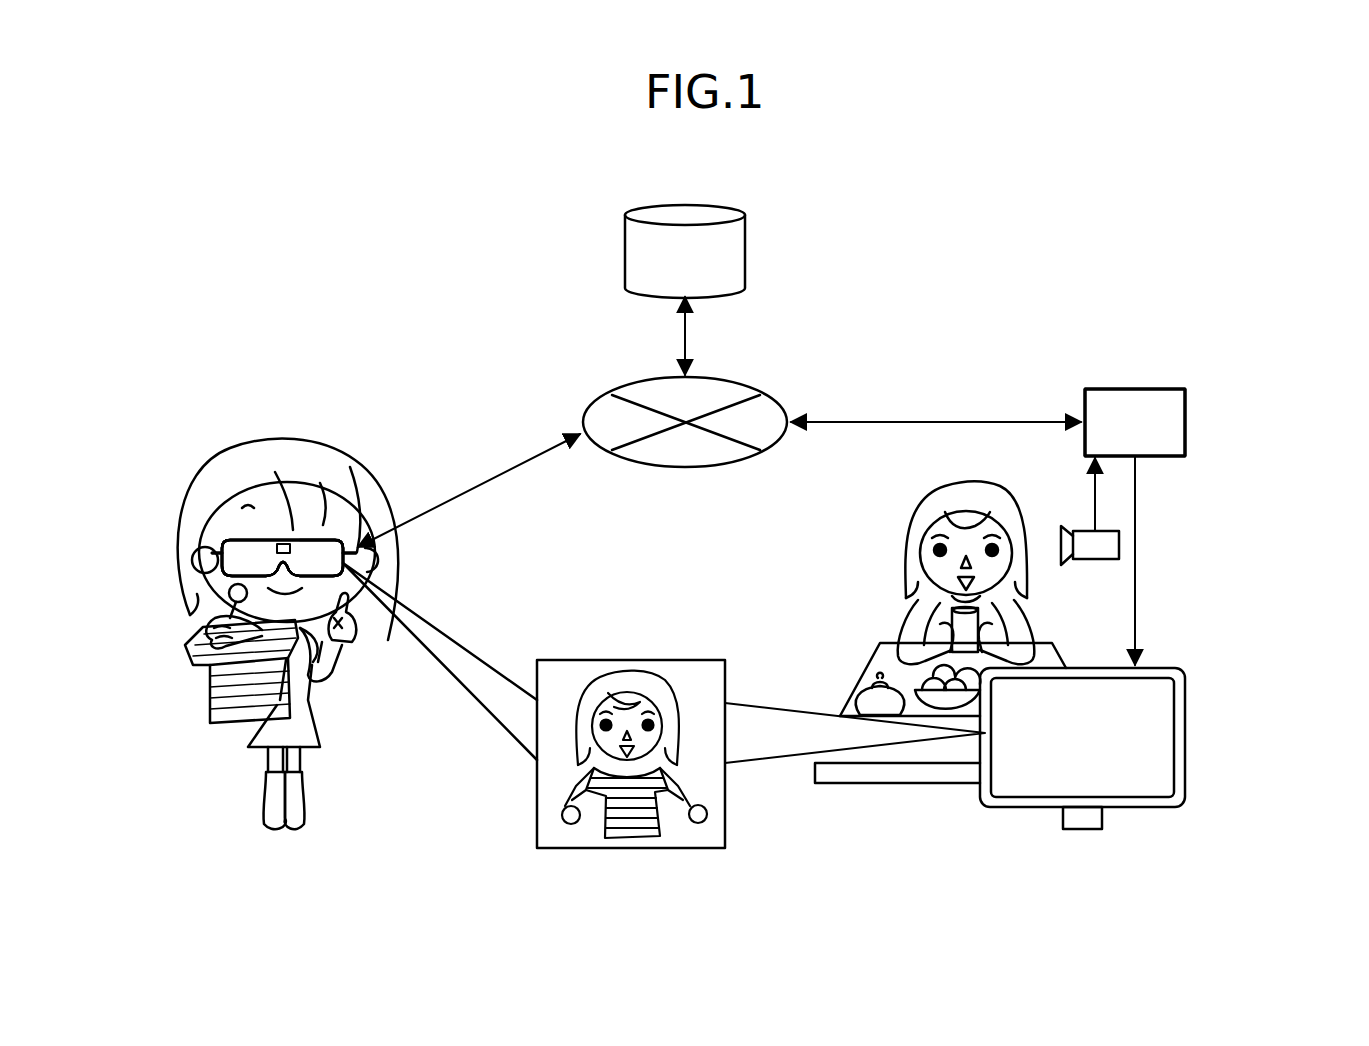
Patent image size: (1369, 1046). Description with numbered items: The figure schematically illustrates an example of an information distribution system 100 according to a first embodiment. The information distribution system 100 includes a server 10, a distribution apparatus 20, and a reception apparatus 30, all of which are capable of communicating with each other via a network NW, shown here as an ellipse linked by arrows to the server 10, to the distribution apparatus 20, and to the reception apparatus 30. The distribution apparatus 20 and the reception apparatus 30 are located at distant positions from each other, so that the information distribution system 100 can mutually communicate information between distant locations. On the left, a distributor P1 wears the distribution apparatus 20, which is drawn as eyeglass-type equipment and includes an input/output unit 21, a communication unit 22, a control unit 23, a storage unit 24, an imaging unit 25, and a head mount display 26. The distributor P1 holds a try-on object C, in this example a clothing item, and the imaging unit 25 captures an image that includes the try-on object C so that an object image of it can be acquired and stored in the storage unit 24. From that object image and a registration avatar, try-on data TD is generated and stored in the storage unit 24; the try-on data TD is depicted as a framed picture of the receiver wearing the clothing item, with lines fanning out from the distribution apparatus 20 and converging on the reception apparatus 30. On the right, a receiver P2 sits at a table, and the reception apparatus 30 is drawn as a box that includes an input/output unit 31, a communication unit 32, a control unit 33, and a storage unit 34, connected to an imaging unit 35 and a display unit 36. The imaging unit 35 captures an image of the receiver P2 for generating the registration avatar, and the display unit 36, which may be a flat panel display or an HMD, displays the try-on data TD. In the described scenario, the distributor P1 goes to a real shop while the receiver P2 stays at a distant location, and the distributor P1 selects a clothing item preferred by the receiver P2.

The server 10 is at (692, 205).
The distribution apparatus 20 is at (228, 534).
The input/output unit 21 is at (222, 556).
The communication unit 22 is at (195, 596).
The control unit 23 is at (195, 596).
The storage unit 24 is at (195, 596).
The imaging unit 25 is at (282, 545).
The head mount display 26 is at (305, 538).
The reception apparatus 30 is at (1152, 375).
The input/output unit 31 is at (1186, 422).
The communication unit 32 is at (1225, 422).
The control unit 33 is at (1225, 422).
The storage unit 34 is at (1225, 422).
The imaging unit 35 is at (1095, 561).
The display unit 36 is at (1186, 737).
The information distribution system 100 is at (938, 283).
The network NW is at (714, 380).
The try-on data TD is at (668, 674).
The distributor P1 is at (314, 428).
The receiver P2 is at (1022, 494).
The try-on object C is at (206, 697).